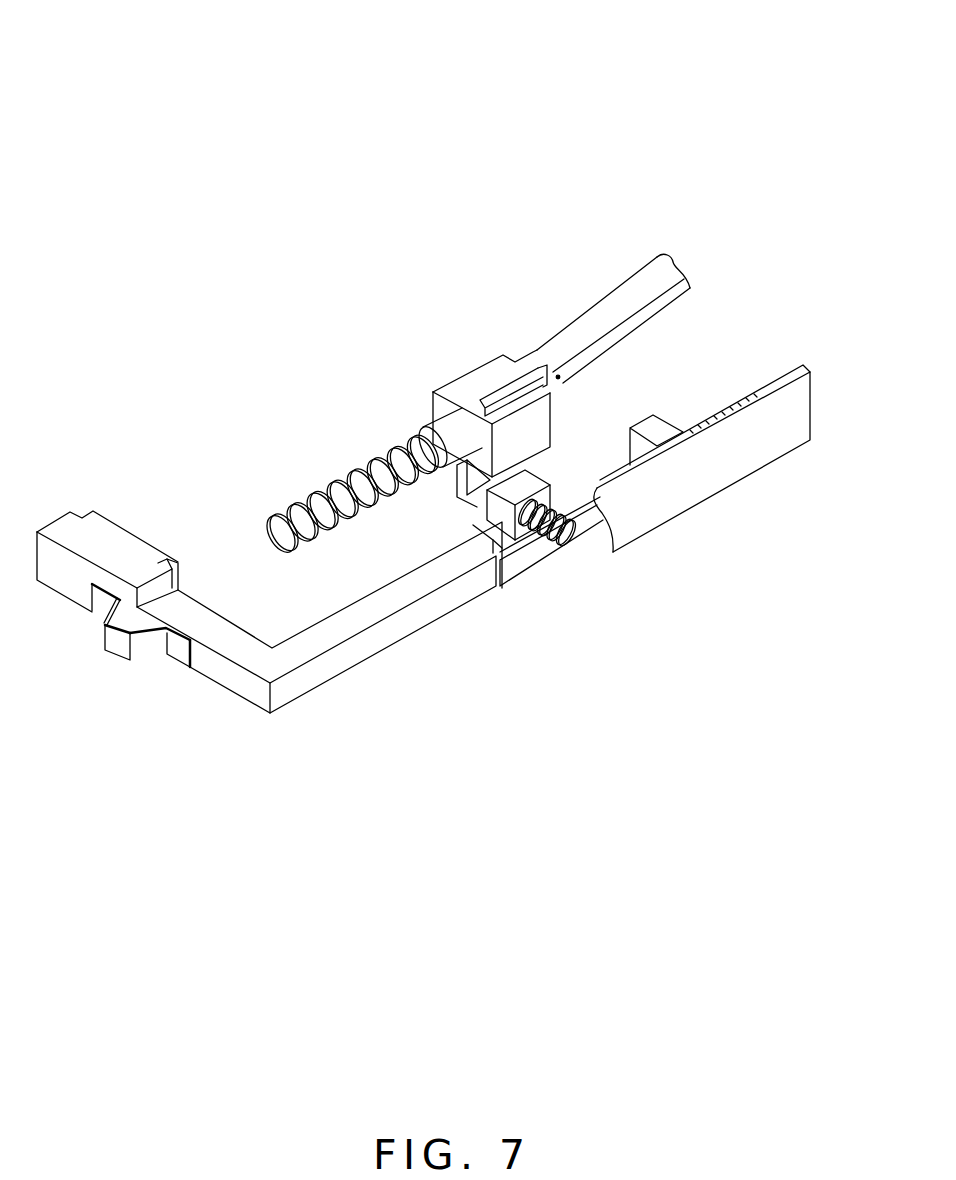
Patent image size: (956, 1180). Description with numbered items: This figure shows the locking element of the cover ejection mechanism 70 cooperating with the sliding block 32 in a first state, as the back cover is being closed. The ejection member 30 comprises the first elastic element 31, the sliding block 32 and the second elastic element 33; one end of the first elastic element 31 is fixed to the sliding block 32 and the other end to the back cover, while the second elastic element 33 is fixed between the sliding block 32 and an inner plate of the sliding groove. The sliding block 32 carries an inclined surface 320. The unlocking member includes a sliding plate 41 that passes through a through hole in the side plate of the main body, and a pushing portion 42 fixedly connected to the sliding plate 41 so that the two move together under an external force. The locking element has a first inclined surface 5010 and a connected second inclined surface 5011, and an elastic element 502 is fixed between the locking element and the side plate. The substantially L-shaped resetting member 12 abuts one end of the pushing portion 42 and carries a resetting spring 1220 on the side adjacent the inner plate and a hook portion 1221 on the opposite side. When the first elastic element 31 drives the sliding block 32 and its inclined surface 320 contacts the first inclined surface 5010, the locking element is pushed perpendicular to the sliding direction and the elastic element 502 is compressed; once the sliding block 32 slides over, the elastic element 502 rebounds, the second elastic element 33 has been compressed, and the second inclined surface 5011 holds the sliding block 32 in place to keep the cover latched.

The cover ejection mechanism 70 is at (266, 64).
The ejection member 30 is at (471, 239).
The first elastic element 31 is at (573, 335).
The sliding block 32 is at (487, 382).
The second elastic element 33 is at (378, 455).
The inclined surface 320 is at (470, 497).
The resetting member 12 is at (323, 637).
The hook portion 1221 is at (118, 545).
The resetting spring 1220 is at (148, 652).
The first inclined surface 5010 is at (493, 473).
The second inclined surface 5011 is at (467, 530).
The elastic element 502 is at (540, 533).
The sliding plate 41 is at (687, 482).
The pushing portion 42 is at (587, 517).